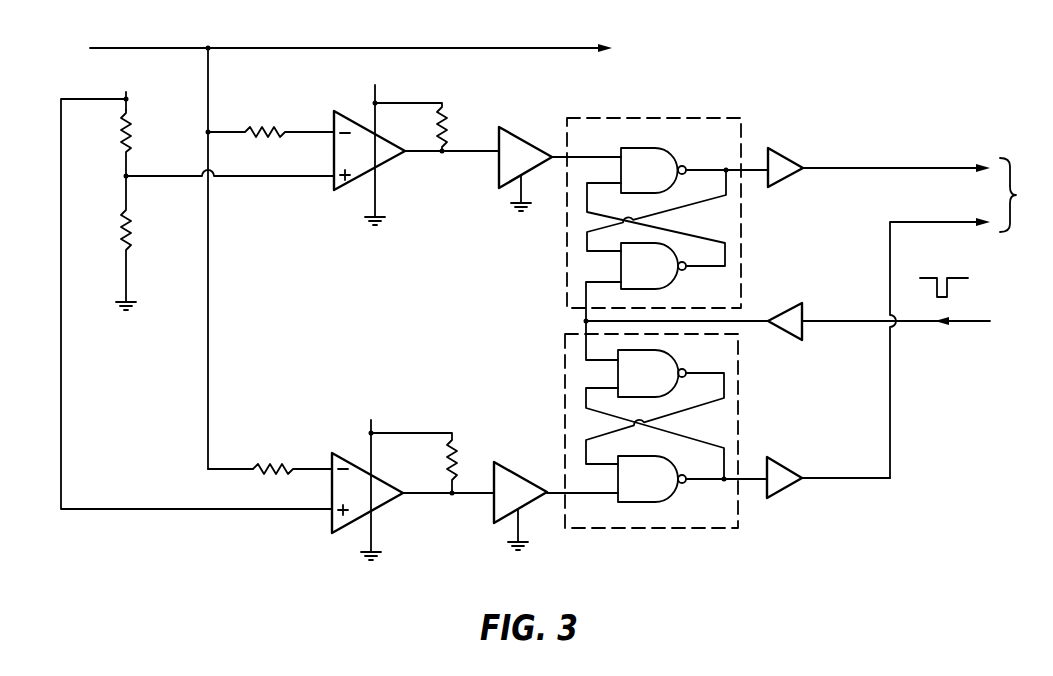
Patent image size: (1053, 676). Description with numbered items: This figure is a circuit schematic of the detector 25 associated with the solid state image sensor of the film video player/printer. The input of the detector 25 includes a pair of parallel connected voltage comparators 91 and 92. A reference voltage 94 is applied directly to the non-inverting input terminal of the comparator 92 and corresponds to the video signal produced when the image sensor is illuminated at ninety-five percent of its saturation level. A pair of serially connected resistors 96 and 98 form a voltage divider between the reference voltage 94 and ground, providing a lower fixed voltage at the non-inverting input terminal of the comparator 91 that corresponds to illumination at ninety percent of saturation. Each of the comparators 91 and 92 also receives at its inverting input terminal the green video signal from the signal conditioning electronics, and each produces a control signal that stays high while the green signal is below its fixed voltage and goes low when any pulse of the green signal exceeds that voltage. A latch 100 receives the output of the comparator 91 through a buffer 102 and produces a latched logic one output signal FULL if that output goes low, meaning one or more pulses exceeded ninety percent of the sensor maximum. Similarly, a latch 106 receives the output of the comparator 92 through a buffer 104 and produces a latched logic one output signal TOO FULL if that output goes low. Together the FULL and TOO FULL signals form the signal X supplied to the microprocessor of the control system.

The detector 25 is at (727, 88).
The voltage comparator 91 is at (334, 190).
The voltage comparator 92 is at (330, 527).
The reference voltage 94 is at (133, 99).
The resistor 96 is at (130, 136).
The resistor 98 is at (130, 230).
The latch 100 is at (670, 95).
The buffer 102 is at (510, 132).
The buffer 104 is at (513, 475).
The latch 106 is at (738, 518).